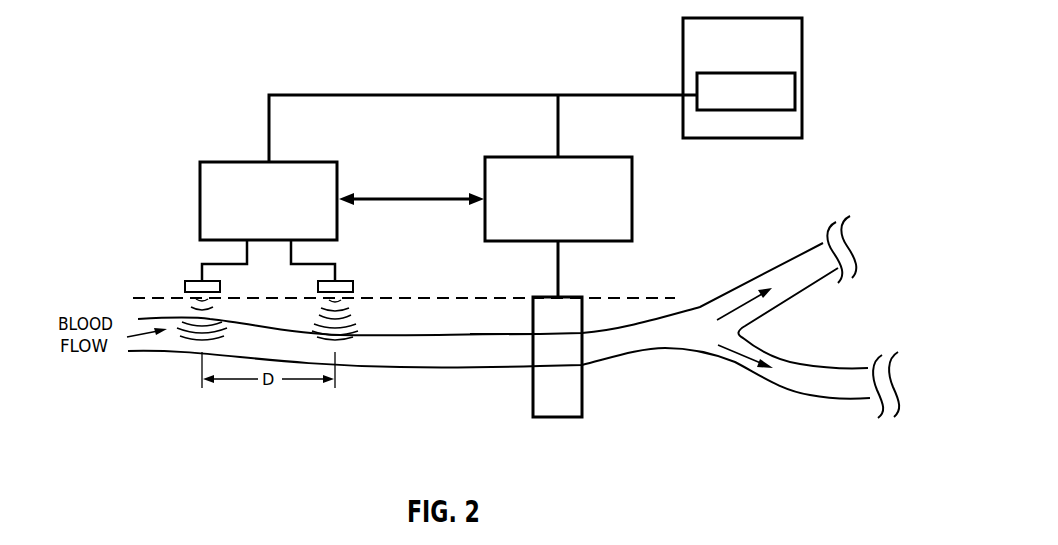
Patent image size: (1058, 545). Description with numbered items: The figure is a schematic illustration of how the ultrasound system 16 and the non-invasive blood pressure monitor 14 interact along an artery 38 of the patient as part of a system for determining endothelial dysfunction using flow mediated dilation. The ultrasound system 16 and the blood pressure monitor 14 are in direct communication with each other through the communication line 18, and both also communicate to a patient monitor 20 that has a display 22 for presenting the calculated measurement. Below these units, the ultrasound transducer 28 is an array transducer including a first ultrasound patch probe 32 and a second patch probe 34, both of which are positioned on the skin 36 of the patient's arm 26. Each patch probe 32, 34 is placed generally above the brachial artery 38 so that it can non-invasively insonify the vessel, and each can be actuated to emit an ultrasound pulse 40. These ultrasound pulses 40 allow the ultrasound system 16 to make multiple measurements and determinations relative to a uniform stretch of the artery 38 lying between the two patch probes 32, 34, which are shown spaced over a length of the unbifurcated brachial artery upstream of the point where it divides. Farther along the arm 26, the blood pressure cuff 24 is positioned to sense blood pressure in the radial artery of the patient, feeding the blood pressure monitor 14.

The non-invasive blood pressure monitor 14 is at (513, 156).
The ultrasound system 16 is at (213, 161).
The communication line 18 is at (407, 197).
The patient monitor 20 is at (683, 62).
The display 22 is at (782, 110).
The blood pressure cuff 24 is at (582, 403).
The patient's arm 26 is at (517, 318).
The ultrasound transducer 28 is at (366, 254).
The first ultrasound patch probe 32 is at (185, 283).
The second ultrasound patch probe 34 is at (318, 283).
The skin 36 is at (648, 297).
The artery 38 is at (405, 365).
The ultrasound pulse 40 is at (355, 318).